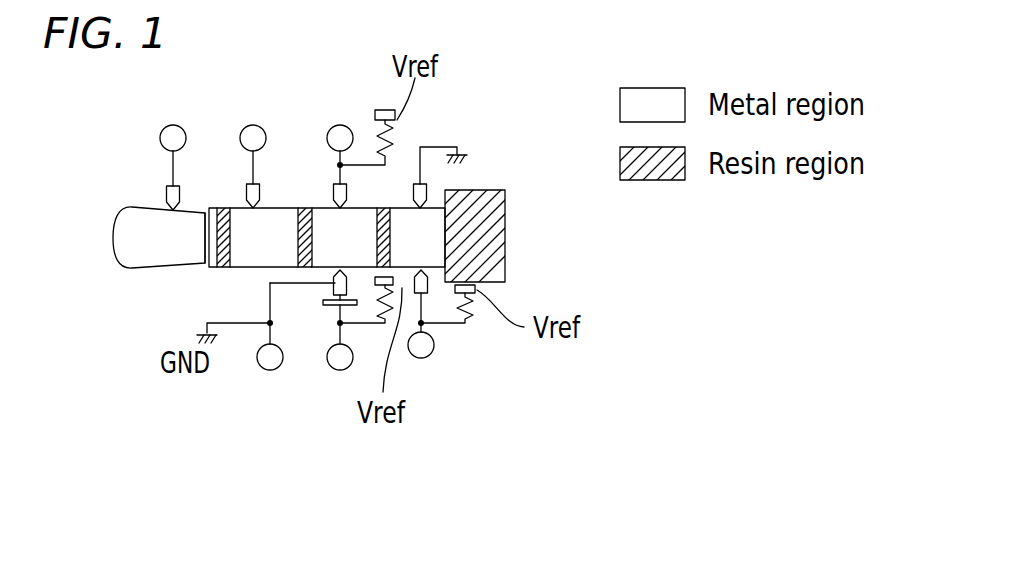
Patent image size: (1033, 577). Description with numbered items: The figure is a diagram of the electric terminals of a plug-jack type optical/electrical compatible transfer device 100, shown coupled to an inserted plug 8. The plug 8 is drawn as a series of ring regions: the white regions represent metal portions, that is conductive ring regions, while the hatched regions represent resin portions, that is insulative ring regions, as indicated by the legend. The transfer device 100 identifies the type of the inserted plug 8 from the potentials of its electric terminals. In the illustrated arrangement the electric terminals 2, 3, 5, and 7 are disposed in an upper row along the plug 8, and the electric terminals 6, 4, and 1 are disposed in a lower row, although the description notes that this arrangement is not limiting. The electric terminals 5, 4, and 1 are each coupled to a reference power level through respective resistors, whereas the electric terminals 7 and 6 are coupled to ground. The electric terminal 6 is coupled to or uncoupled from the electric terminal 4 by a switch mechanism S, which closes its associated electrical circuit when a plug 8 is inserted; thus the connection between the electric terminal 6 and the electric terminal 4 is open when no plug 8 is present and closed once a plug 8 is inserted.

The plug-jack type optical/electrical compatible transfer device 100 is at (354, 144).
The plug 8 is at (538, 248).
The electric terminal 1 is at (421, 341).
The electric terminal 2 is at (173, 146).
The electric terminal 3 is at (253, 145).
The electric terminal 4 is at (328, 342).
The electric terminal 5 is at (340, 145).
The electric terminal 6 is at (296, 351).
The electric terminal 7 is at (441, 153).
The switch mechanism S is at (328, 314).